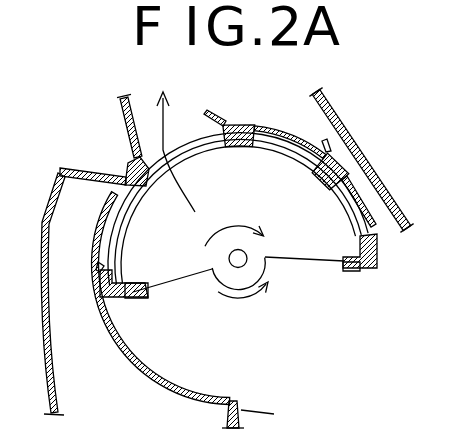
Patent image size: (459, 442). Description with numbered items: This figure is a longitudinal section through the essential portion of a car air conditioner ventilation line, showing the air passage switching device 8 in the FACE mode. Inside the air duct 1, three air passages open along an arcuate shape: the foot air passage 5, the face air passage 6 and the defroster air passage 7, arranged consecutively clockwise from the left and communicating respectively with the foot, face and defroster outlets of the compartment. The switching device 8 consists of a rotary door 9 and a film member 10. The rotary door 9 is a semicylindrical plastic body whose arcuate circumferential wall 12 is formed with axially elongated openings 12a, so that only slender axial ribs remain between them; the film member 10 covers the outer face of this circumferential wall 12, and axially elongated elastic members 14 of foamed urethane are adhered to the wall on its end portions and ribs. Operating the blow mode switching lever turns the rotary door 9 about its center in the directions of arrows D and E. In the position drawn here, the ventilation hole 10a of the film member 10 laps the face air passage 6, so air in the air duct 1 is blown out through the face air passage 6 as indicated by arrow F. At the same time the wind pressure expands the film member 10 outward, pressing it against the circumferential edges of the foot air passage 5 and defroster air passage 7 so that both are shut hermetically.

The air duct 1 is at (231, 407).
The foot air passage 5 is at (90, 216).
The face air passage 6 is at (193, 120).
The defroster air passage 7 is at (290, 120).
The air passage switching device 8 is at (286, 283).
The rotary door 9 is at (167, 290).
The film member 10 is at (108, 200).
The ventilation hole 10a is at (146, 150).
The circumferential wall 12 is at (322, 191).
The openings 12a is at (202, 148).
The elastic members 14 is at (265, 143).
The arrow D is at (238, 216).
The arrow E is at (237, 297).
The arrow F is at (167, 142).